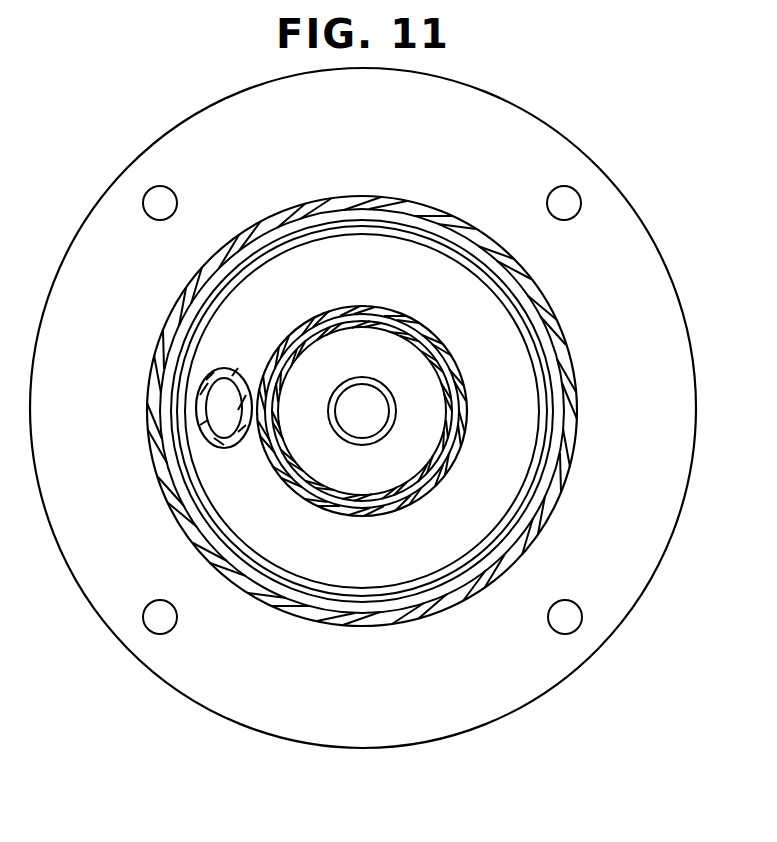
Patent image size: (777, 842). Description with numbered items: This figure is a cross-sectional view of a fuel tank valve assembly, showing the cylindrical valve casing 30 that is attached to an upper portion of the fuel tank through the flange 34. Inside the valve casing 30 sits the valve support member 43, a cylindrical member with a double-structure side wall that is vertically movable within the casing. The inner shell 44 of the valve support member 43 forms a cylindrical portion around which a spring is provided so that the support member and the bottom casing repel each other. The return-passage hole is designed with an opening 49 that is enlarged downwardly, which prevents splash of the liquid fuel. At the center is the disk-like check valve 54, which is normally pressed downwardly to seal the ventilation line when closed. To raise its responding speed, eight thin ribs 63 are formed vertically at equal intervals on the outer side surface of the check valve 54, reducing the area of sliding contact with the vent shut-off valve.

The valve casing 30 is at (472, 228).
The flange 34 is at (603, 253).
The valve support member 43 is at (211, 304).
The inner shell 44 is at (302, 323).
The opening 49 is at (208, 414).
The check valve 54 is at (523, 402).
The ribs 63 is at (305, 453).